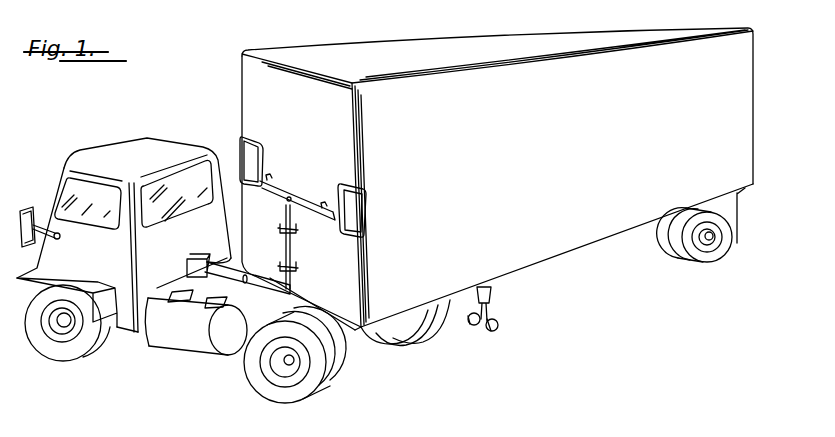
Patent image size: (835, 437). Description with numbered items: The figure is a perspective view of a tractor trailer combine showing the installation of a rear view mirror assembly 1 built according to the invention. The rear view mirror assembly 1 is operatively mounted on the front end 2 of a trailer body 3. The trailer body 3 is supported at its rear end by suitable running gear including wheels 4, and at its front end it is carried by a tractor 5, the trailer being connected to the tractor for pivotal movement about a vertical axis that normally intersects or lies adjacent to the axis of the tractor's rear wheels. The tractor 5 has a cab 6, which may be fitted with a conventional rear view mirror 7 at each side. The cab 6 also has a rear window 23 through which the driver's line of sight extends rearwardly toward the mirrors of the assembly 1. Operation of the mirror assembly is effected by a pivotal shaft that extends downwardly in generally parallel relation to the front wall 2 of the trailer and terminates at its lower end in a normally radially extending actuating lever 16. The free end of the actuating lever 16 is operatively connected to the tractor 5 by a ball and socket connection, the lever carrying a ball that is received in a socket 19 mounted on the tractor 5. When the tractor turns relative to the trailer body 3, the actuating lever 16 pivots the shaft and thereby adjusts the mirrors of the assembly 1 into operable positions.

The rear view mirror assembly 1 is at (304, 218).
The front end 2 is at (331, 142).
The trailer body 3 is at (565, 248).
The wheels 4 is at (712, 268).
The tractor 5 is at (141, 344).
The cab 6 is at (107, 160).
The rear view mirror 7 is at (28, 216).
The actuating lever 16 is at (256, 290).
The socket 19 is at (191, 260).
The rear window 23 is at (188, 178).